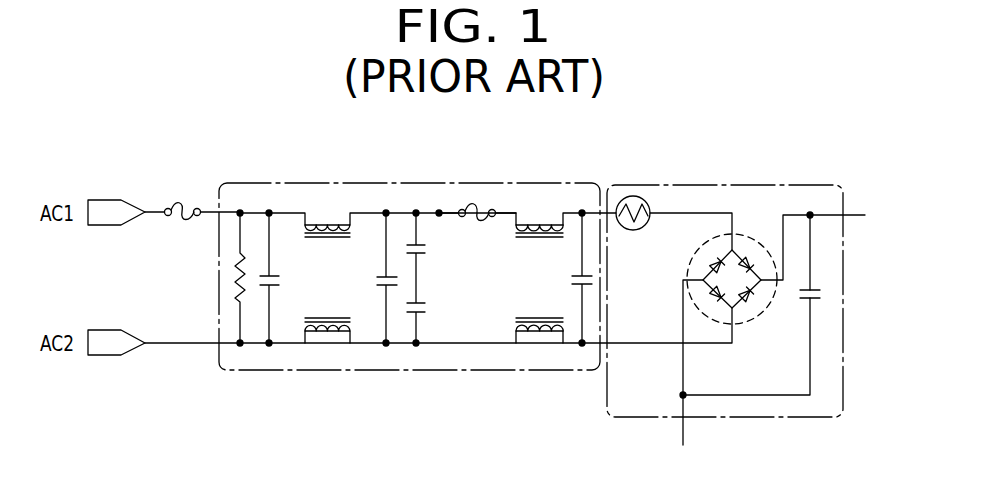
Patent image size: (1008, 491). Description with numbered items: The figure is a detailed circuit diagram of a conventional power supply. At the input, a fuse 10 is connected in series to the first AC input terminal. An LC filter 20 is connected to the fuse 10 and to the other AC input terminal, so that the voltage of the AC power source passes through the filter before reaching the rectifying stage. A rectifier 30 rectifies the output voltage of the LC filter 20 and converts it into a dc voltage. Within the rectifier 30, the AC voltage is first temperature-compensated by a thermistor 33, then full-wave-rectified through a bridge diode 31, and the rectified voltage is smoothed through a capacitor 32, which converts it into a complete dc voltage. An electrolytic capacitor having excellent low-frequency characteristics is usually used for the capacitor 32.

The fuse 10 is at (173, 202).
The LC filter 20 is at (409, 182).
The rectifier 30 is at (744, 286).
The bridge diode 31 is at (757, 317).
The capacitor 32 is at (822, 291).
The thermistor 33 is at (632, 196).